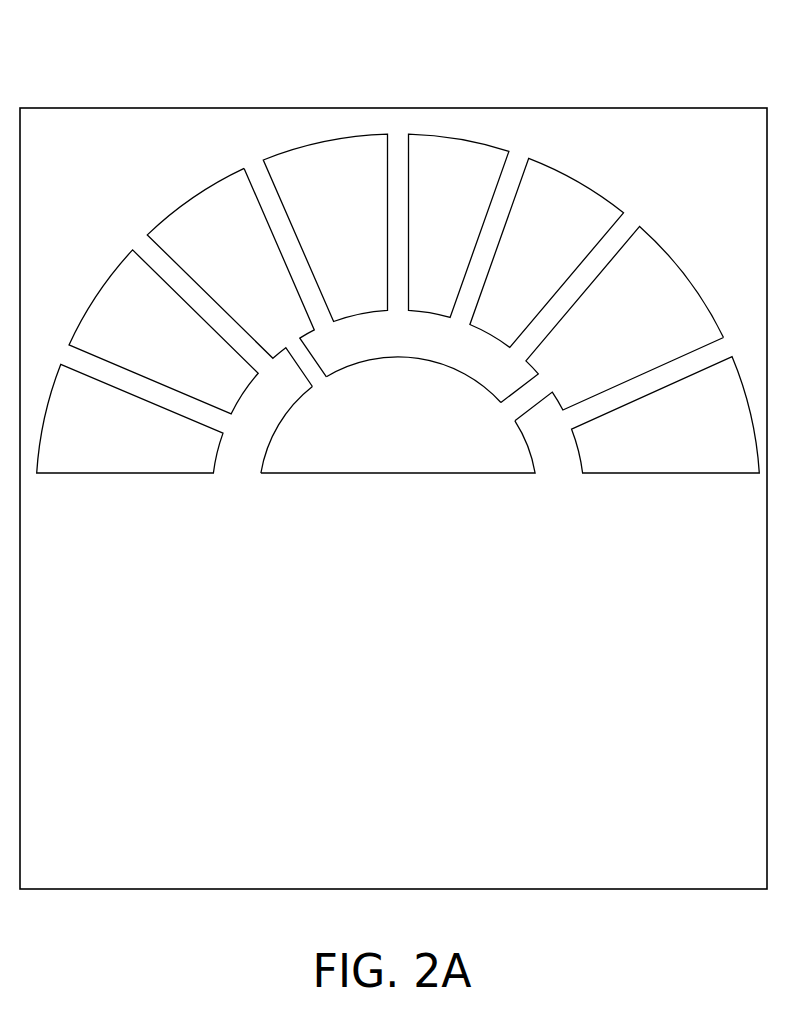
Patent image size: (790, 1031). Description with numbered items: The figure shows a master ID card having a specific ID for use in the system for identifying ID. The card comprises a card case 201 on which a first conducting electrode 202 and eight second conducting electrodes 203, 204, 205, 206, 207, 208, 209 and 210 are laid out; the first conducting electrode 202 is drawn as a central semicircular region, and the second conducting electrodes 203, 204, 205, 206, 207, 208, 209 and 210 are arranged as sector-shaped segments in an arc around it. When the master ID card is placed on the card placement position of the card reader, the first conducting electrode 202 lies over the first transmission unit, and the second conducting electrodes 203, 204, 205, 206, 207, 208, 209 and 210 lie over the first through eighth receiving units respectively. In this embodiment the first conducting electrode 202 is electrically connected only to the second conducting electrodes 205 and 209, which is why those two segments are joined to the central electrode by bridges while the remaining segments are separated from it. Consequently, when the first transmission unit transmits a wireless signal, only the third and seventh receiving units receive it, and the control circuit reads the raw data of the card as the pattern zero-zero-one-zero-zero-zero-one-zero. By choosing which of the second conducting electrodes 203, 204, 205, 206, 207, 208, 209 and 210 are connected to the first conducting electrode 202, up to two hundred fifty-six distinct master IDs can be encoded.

The card case 201 is at (345, 108).
The first conducting electrode 202 is at (398, 415).
The second conducting electrode 203 is at (130, 418).
The second conducting electrode 204 is at (163, 332).
The second conducting electrode 205 is at (236, 277).
The second conducting electrode 206 is at (325, 227).
The second conducting electrode 207 is at (459, 225).
The second conducting electrode 208 is at (547, 252).
The second conducting electrode 209 is at (612, 323).
The second conducting electrode 210 is at (666, 415).